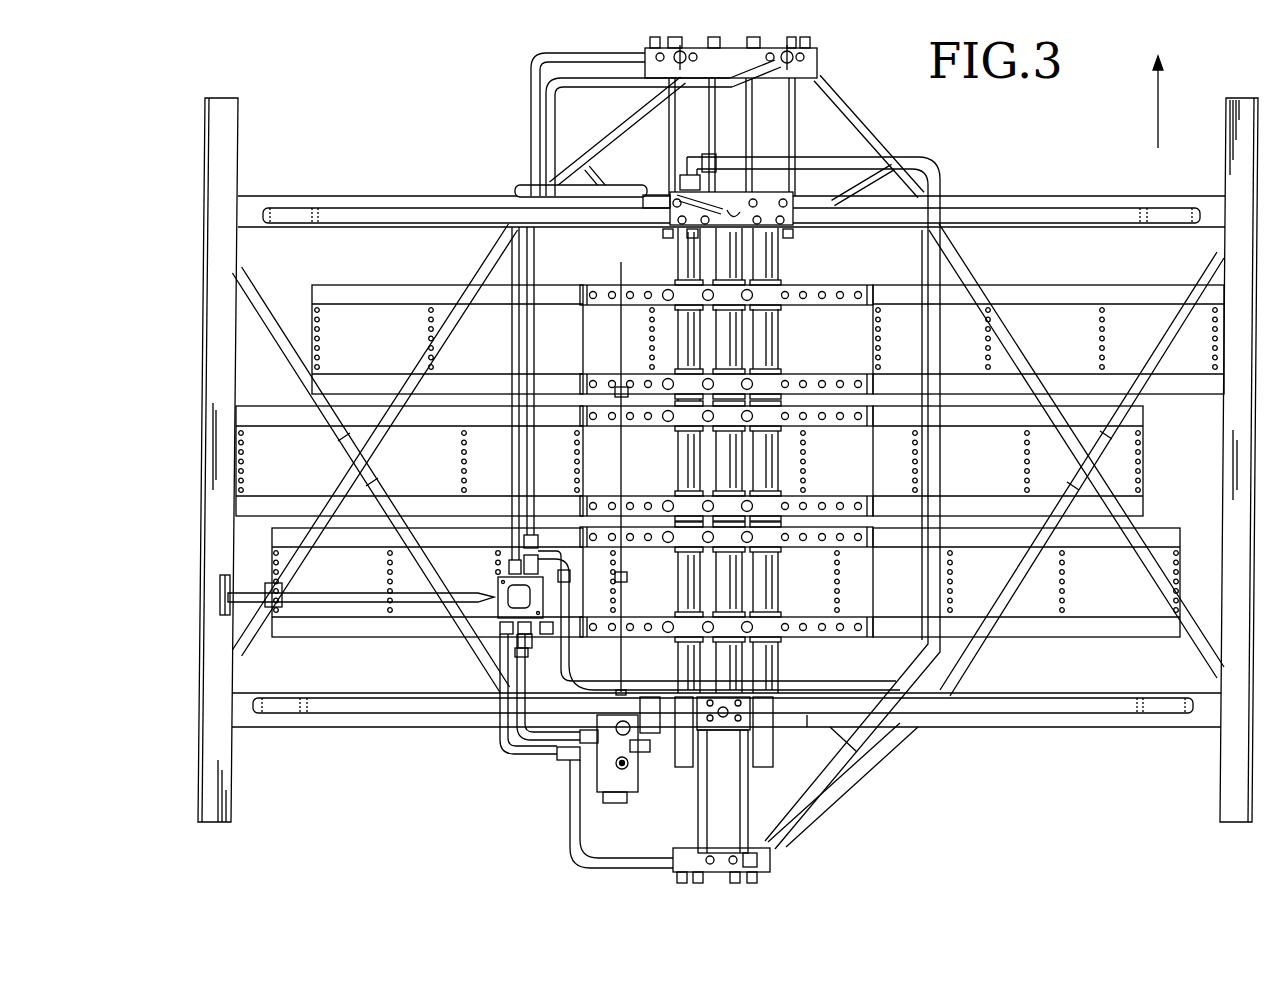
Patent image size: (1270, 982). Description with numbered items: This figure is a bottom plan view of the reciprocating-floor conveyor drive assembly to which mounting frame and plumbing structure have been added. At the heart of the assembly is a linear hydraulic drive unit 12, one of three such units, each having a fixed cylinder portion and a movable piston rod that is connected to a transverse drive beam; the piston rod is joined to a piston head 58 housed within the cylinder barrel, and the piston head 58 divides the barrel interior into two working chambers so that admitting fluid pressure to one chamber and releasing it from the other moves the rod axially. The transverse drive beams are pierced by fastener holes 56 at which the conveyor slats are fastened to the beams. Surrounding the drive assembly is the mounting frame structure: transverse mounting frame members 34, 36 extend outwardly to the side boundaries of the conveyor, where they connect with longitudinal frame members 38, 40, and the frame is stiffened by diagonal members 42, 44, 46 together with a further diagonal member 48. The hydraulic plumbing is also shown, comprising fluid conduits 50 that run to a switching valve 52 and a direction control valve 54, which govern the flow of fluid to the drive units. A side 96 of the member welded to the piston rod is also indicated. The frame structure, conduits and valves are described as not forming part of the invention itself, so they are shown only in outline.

The linear hydraulic drive unit 12 is at (690, 797).
The transverse mounting frame member 34 is at (778, 707).
The transverse mounting frame member 36 is at (800, 218).
The longitudinal frame member 38 is at (227, 160).
The longitudinal frame member 40 is at (1228, 740).
The diagonal member 42 is at (321, 383).
The diagonal member 44 is at (416, 538).
The diagonal member 46 is at (1025, 358).
The right cross brace 48 is at (992, 607).
The fluid conduits 50 is at (518, 144).
The switching valve 52 is at (593, 803).
The direction control valve 54 is at (491, 621).
The fastener holes 56 is at (316, 312).
The piston head 58 is at (735, 790).
The side of member 96 is at (568, 673).